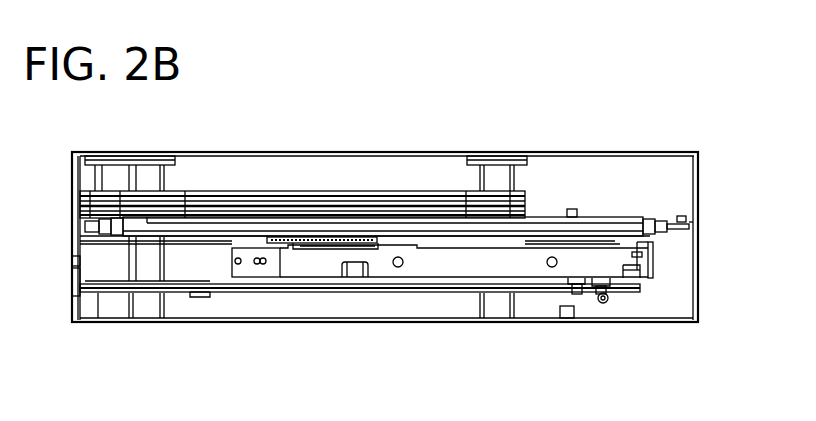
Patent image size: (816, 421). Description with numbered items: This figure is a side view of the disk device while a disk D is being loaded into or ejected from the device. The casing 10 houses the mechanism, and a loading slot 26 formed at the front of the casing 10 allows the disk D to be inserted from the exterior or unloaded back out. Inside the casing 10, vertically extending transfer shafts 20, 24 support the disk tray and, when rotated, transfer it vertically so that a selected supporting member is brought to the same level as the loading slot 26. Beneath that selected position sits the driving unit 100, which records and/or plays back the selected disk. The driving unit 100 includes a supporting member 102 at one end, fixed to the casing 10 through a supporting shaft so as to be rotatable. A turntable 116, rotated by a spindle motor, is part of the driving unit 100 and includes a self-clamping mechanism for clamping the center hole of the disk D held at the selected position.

The casing 10 is at (697, 173).
The transfer shaft 20 is at (113, 166).
The transfer shaft 24 is at (494, 166).
The disk D is at (604, 217).
The loading slot 26 is at (638, 217).
The driving unit 100 is at (372, 290).
The turntable 116 is at (282, 243).
The supporting member 102 is at (655, 270).